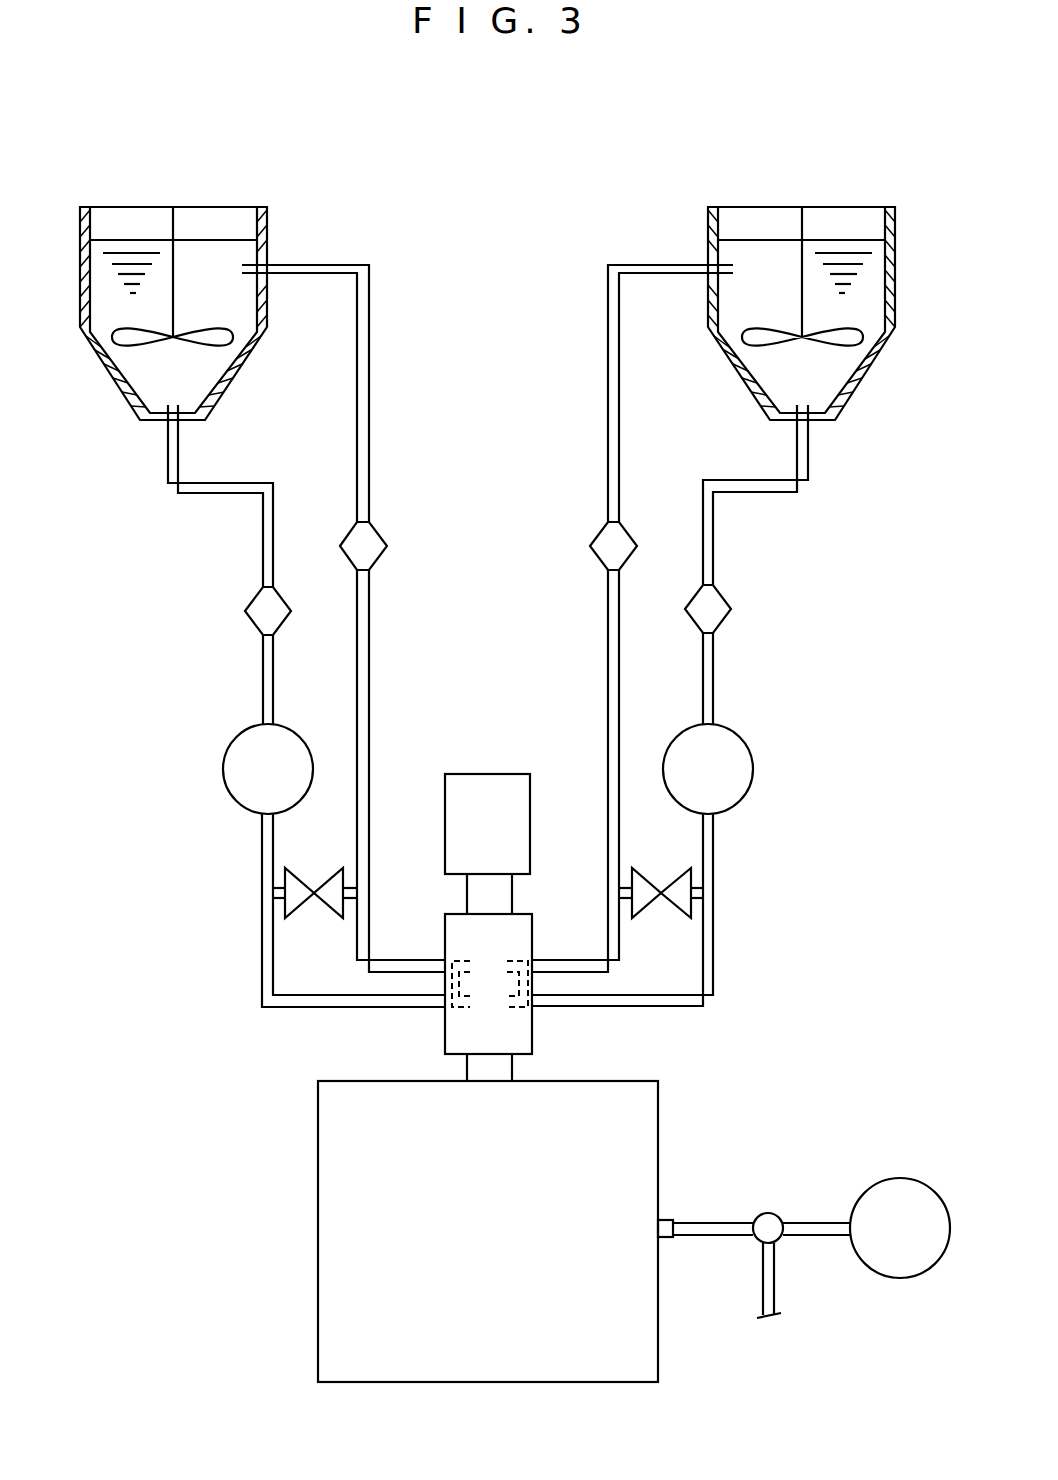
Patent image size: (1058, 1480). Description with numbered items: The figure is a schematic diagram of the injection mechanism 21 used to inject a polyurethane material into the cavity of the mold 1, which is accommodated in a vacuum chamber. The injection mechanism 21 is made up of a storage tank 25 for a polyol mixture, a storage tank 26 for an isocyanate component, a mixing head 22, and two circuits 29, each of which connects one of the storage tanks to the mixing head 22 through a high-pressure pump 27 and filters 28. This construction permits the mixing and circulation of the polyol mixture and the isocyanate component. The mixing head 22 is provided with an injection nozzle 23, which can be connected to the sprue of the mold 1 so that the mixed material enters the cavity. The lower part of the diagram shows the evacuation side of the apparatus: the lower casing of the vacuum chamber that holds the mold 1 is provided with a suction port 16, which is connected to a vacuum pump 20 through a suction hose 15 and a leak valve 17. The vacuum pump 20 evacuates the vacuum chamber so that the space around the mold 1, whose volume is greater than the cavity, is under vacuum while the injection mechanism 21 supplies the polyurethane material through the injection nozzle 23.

The mold 1 is at (640, 1103).
The suction hose 15 is at (728, 1227).
The suction port 16 is at (667, 1218).
The leak valve 17 is at (772, 1225).
The vacuum pump 20 is at (898, 1190).
The injection mechanism 21 is at (240, 1032).
The mixing head 22 is at (515, 1041).
The injection nozzle 23 is at (472, 1067).
The storage tank for a polyol mixture 25 is at (843, 220).
The storage tank for an isocyanate component 26 is at (216, 220).
The high-pressure pump 27 is at (228, 775).
The filters 28 is at (372, 545).
The circuits 29 is at (362, 660).